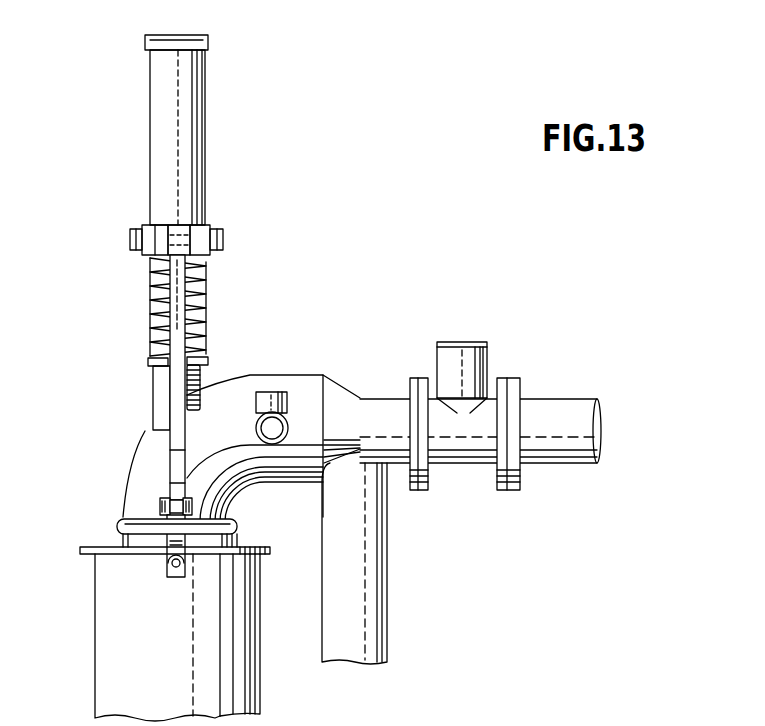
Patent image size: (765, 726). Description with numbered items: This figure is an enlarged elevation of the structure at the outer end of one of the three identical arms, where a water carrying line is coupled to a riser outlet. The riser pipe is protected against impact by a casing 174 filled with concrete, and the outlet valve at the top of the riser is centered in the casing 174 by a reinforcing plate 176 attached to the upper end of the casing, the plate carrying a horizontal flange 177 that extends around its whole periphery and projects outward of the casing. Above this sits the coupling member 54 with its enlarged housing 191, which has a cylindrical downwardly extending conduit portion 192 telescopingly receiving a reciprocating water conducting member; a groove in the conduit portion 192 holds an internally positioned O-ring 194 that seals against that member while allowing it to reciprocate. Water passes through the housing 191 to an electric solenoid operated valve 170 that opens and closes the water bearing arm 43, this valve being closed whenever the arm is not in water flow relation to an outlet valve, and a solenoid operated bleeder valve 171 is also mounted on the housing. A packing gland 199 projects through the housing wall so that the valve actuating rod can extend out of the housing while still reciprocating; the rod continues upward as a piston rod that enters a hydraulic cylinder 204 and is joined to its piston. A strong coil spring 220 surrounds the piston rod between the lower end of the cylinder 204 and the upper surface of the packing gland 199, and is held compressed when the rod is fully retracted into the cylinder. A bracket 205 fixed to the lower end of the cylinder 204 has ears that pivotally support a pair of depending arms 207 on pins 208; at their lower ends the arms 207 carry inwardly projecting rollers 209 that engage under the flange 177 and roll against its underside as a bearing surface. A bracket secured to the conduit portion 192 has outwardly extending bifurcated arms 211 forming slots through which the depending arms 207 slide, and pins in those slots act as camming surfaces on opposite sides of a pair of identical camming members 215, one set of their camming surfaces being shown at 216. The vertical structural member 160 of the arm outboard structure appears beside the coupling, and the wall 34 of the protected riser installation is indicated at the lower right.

The tank wall 34 is at (262, 705).
The water bearing arm 43 is at (555, 417).
The coupling member 54 is at (118, 478).
The vertical structural member 160 is at (377, 637).
The electric solenoid operated valve 170 is at (480, 342).
The solenoid operated bleeder valve 171 is at (270, 392).
The casing 174 is at (94, 680).
The reinforcing plate 176 is at (102, 545).
The horizontal flange 177 is at (85, 552).
The enlarged housing 191 is at (225, 400).
The cylindrical downwardly extending conduit portion 192 is at (248, 548).
The O-ring 194 is at (240, 531).
The packing gland 199 is at (162, 385).
The hydraulic cylinder 204 is at (202, 177).
The bracket 205 is at (205, 230).
The depending arms 207 is at (173, 275).
The pins 208 is at (165, 242).
The rollers 209 is at (175, 578).
The bifurcated arms 211 is at (190, 512).
The camming members 215 is at (175, 537).
The camming surfaces 216 is at (192, 480).
The coil spring 220 is at (205, 295).